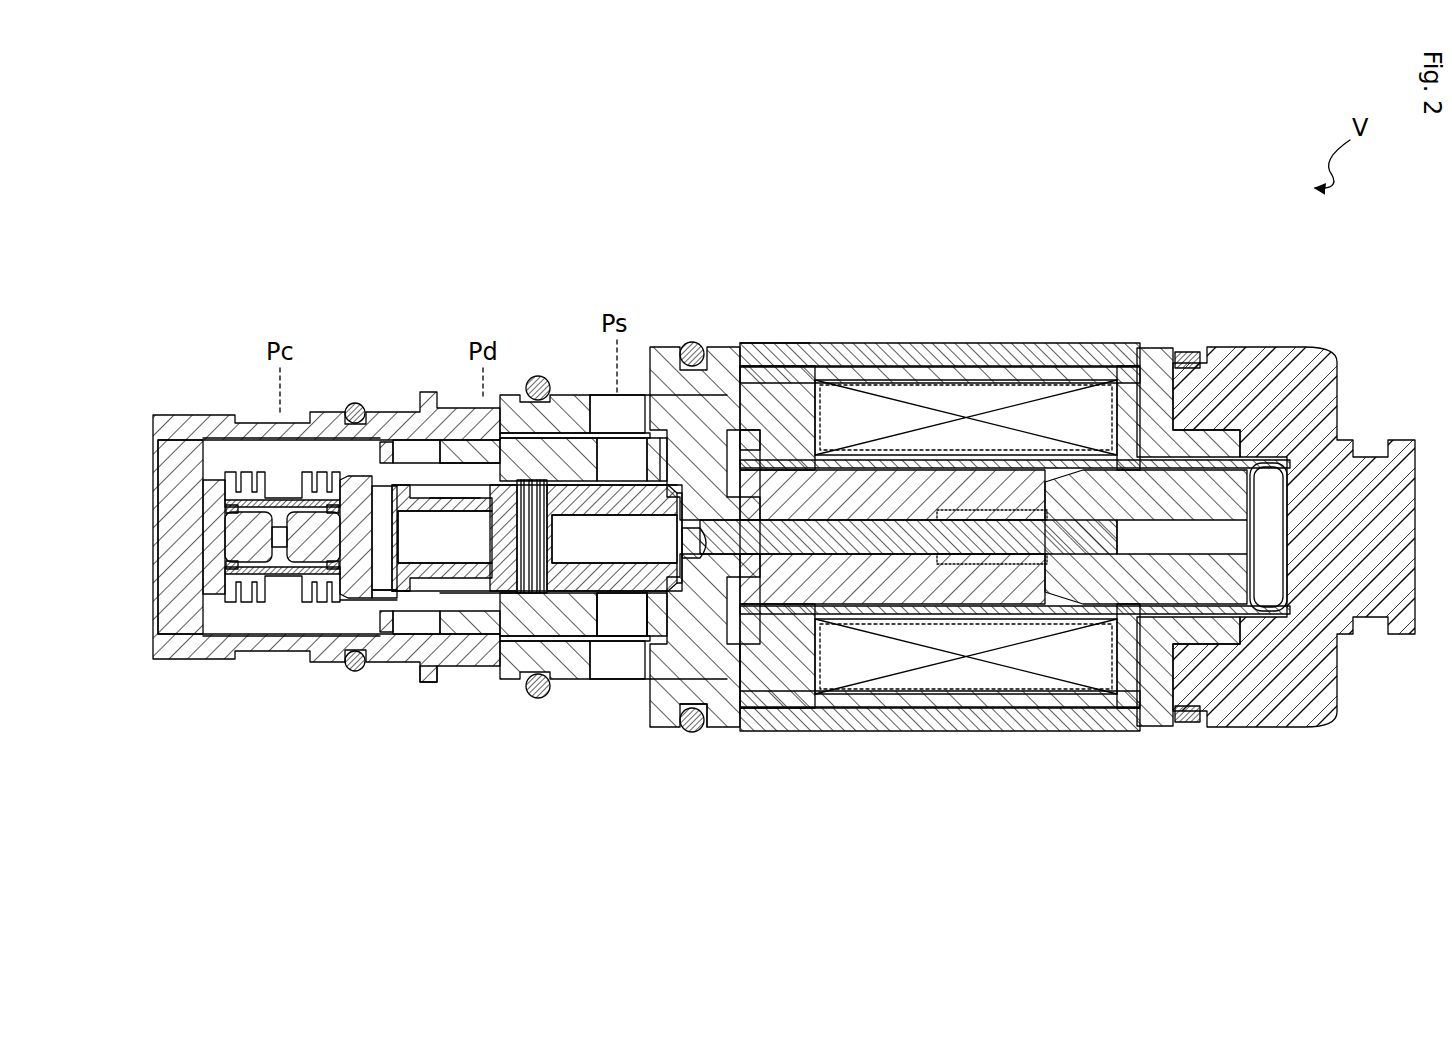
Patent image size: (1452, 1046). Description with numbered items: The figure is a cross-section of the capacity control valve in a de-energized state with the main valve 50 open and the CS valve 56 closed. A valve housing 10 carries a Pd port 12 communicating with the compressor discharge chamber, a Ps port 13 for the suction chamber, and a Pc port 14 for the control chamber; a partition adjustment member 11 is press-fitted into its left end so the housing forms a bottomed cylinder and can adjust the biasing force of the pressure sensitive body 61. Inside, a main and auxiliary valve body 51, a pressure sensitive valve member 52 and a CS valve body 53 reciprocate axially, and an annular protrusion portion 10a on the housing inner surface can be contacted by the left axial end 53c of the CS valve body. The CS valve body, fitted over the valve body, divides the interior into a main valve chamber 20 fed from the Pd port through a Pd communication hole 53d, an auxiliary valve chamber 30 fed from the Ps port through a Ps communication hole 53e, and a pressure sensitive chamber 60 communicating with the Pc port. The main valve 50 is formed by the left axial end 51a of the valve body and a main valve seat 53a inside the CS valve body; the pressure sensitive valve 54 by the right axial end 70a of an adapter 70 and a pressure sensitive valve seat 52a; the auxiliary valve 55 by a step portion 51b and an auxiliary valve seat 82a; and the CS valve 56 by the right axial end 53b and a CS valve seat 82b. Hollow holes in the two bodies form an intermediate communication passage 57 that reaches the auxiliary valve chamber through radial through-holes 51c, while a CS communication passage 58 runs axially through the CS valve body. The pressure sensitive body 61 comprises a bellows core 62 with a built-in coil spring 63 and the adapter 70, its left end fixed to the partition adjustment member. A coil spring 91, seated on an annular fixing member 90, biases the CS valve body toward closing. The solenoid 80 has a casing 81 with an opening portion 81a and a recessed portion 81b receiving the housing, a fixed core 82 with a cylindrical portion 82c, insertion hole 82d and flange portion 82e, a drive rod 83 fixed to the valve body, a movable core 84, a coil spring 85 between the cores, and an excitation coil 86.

The valve housing 10 is at (178, 412).
The annular protrusion portion 10a is at (422, 682).
The partition adjustment member 11 is at (178, 532).
The Pd port 12 is at (530, 392).
The Ps port 13 is at (600, 392).
The Pc port 14 is at (258, 440).
The main valve chamber 20 is at (452, 460).
The auxiliary valve chamber 30 is at (552, 396).
The main valve 50 is at (425, 242).
The main and auxiliary valve body 51 is at (600, 637).
The left axial end 51a is at (470, 462).
The step portion 51b is at (765, 430).
The through-holes 51c is at (705, 735).
The pressure sensitive valve member 52 is at (495, 637).
The pressure sensitive valve seat 52a is at (400, 640).
The CS valve body 53 is at (555, 637).
The main valve seat 53a is at (448, 497).
The right axial end 53b is at (665, 484).
The left axial end 53c is at (456, 597).
The Pd communication hole 53d is at (445, 537).
The Ps communication hole 53e is at (629, 539).
The pressure sensitive valve 54 is at (440, 840).
The auxiliary valve 55 is at (840, 238).
The CS valve 56 is at (700, 238).
The intermediate communication passage 57 is at (612, 597).
The CS communication passage 58 is at (645, 637).
The pressure sensitive chamber 60 is at (222, 470).
The pressure sensitive body 61 is at (240, 640).
The bellows core 62 is at (300, 618).
The coil spring 63 is at (237, 612).
The adapter 70 is at (353, 620).
The right axial end 70a is at (385, 600).
The solenoid 80 is at (1210, 318).
The casing 81 is at (674, 742).
The opening portion 81a is at (790, 700).
The recessed portion 81b is at (740, 714).
The fixed core 82 is at (1076, 348).
The auxiliary valve seat 82a is at (748, 362).
The CS valve seat 82b is at (657, 440).
The cylindrical portion 82c is at (1000, 470).
The insertion hole 82d is at (940, 510).
The flange portion 82e is at (762, 470).
The drive rod 83 is at (1152, 348).
The movable core 84 is at (1190, 722).
The coil spring 85 is at (1060, 660).
The coil 86 is at (968, 694).
The fixing member 90 is at (386, 442).
The coil spring 91 is at (410, 462).